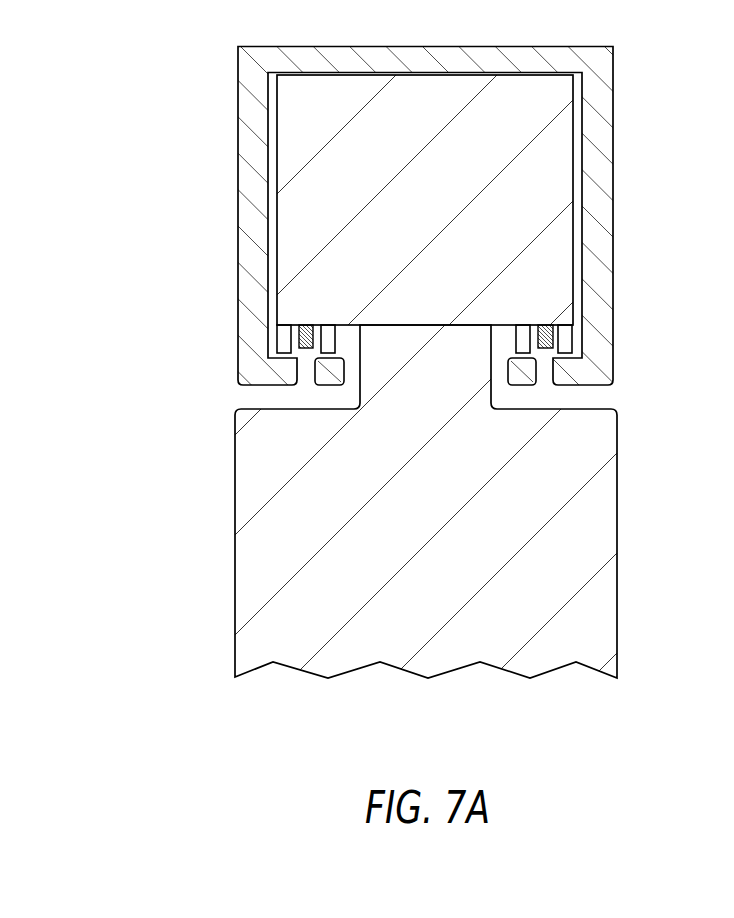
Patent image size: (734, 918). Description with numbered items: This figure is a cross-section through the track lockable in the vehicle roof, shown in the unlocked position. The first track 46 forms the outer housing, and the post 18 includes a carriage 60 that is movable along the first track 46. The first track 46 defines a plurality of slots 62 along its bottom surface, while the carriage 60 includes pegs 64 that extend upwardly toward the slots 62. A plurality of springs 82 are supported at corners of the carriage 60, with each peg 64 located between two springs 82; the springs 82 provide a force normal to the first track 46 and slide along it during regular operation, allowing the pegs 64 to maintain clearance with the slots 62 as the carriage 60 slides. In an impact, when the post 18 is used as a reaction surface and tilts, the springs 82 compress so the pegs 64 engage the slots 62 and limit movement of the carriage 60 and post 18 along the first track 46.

The post 18 is at (617, 518).
The first track 46 is at (613, 101).
The carriage 60 is at (303, 131).
The slots 62 is at (297, 361).
The peg 64 is at (309, 326).
The springs 82 is at (280, 342).